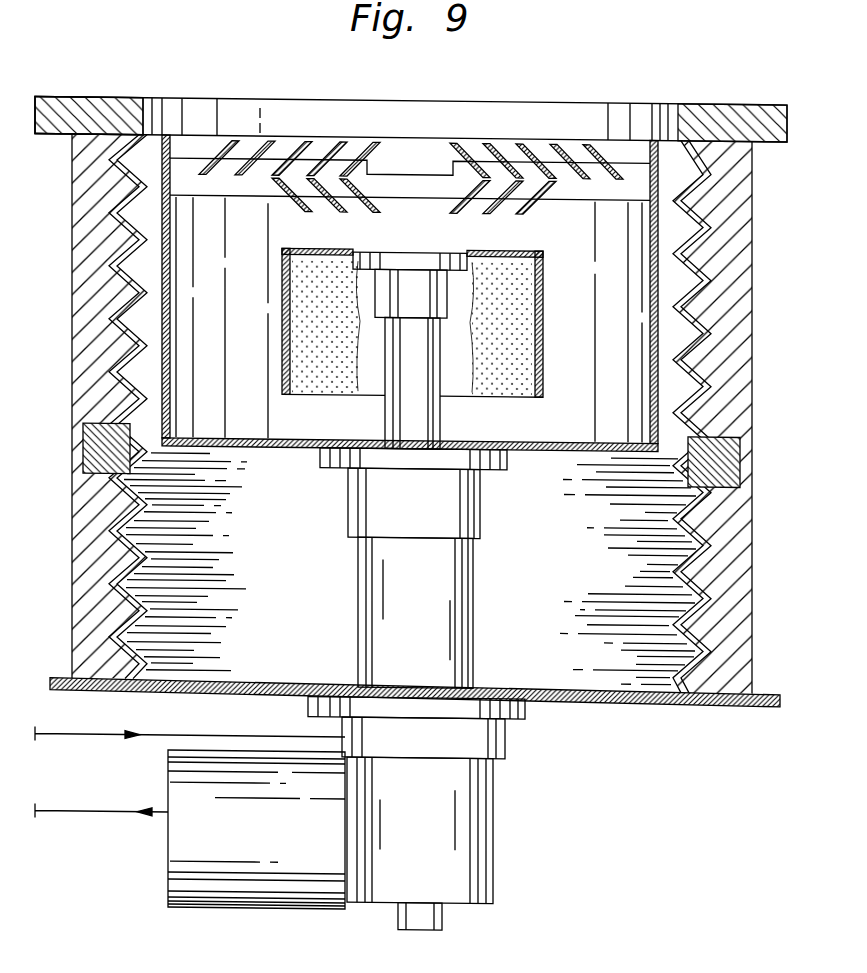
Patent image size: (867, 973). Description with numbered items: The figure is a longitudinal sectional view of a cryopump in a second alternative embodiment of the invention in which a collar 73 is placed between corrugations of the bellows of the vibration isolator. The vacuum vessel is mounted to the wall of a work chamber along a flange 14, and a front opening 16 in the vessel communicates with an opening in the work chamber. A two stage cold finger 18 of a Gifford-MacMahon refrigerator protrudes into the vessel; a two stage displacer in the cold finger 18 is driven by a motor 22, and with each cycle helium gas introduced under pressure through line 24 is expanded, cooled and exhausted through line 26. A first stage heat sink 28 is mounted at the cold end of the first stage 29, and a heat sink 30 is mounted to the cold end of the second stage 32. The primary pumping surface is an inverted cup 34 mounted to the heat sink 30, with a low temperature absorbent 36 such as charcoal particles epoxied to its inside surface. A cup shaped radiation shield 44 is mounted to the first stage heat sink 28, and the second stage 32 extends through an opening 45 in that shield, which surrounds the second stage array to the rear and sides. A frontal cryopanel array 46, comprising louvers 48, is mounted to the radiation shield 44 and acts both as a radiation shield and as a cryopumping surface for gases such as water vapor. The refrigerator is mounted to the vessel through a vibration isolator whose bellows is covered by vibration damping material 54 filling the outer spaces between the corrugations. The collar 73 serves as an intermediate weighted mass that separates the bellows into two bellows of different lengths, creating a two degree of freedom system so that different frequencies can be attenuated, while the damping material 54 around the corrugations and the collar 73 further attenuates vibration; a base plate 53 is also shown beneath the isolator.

The flange 14 is at (62, 140).
The front opening 16 is at (533, 104).
The two stage cold finger 18 is at (492, 510).
The motor 22 is at (258, 911).
The line 24 is at (118, 736).
The line 26 is at (96, 818).
The first stage heat sink 28 is at (342, 466).
The first stage 29 is at (472, 660).
The heat sink 30 is at (398, 254).
The second stage 32 is at (385, 372).
The inverted cup 34 is at (543, 348).
The low temperature absorbent 36 is at (523, 372).
The radiation shield 44 is at (172, 336).
The opening 45 is at (380, 437).
The frontal cryopanel array 46 is at (316, 126).
The louvers 48 is at (362, 143).
The base plate 53 is at (652, 706).
The vibration damping material 54 is at (738, 518).
The collar 73 is at (741, 433).